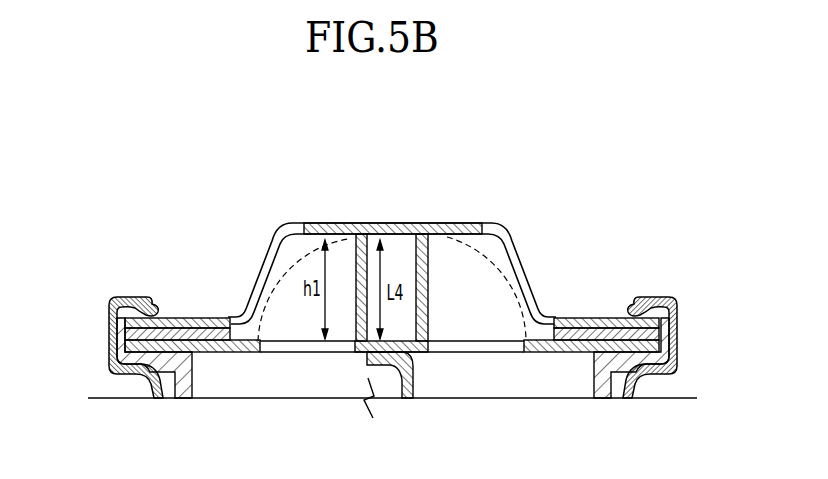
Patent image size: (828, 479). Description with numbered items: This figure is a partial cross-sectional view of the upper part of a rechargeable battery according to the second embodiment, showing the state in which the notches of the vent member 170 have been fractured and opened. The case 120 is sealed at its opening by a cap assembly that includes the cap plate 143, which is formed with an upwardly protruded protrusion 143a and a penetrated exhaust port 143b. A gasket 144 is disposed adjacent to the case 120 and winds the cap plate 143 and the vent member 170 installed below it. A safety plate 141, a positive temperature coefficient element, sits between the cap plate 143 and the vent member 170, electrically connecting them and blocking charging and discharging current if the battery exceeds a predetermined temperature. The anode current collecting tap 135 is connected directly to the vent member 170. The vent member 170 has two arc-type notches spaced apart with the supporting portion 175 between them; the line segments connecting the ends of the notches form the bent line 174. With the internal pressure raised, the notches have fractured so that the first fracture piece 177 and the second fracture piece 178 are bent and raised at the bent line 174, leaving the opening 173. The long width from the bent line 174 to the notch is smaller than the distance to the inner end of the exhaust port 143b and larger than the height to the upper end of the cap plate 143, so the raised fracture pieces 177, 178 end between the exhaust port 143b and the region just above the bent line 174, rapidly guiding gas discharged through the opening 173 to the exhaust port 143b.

The case 120 is at (108, 333).
The anode current collecting tap 135 is at (398, 383).
The safety plate 141 is at (195, 320).
The cap plate 143 is at (603, 318).
The protrusion 143a is at (393, 228).
The exhaust port 143b is at (525, 283).
The gasket 144 is at (137, 297).
The vent member 170 is at (238, 352).
The opening 173 is at (292, 352).
The bent line 174 is at (352, 352).
The supporting portion 175 is at (398, 343).
The first fracture piece 177 is at (355, 240).
The second fracture piece 178 is at (435, 240).